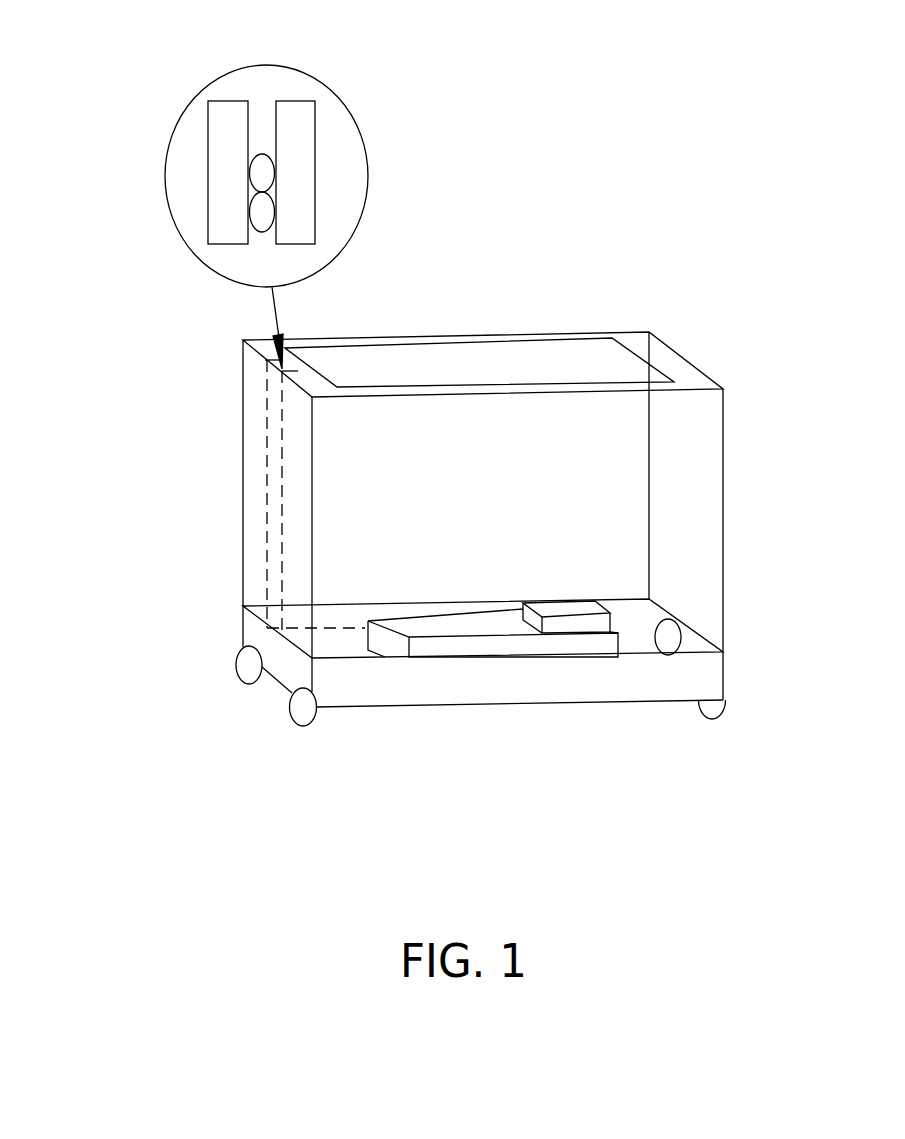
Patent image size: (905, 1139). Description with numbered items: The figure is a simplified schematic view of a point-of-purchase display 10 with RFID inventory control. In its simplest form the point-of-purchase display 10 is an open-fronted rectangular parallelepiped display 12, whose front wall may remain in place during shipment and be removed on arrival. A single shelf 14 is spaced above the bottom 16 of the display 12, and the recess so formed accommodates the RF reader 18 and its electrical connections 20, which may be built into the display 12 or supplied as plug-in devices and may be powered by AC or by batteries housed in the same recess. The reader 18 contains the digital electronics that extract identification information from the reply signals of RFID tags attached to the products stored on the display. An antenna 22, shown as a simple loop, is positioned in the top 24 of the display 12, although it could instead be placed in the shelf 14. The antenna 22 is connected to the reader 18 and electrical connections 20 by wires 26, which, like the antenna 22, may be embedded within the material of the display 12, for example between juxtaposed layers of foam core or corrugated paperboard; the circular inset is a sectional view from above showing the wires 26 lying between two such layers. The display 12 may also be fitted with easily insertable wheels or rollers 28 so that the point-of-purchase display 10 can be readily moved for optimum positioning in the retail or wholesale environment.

The point-of-purchase display 10 is at (135, 308).
The display 12 is at (245, 534).
The shelf 14 is at (358, 578).
The bottom 16 is at (360, 708).
The RF reader 18 is at (592, 599).
The electrical connections 20 is at (566, 617).
The antenna 22 is at (590, 358).
The top 24 is at (680, 328).
The wires 26 is at (262, 153).
The wheels or rollers 28 is at (236, 673).